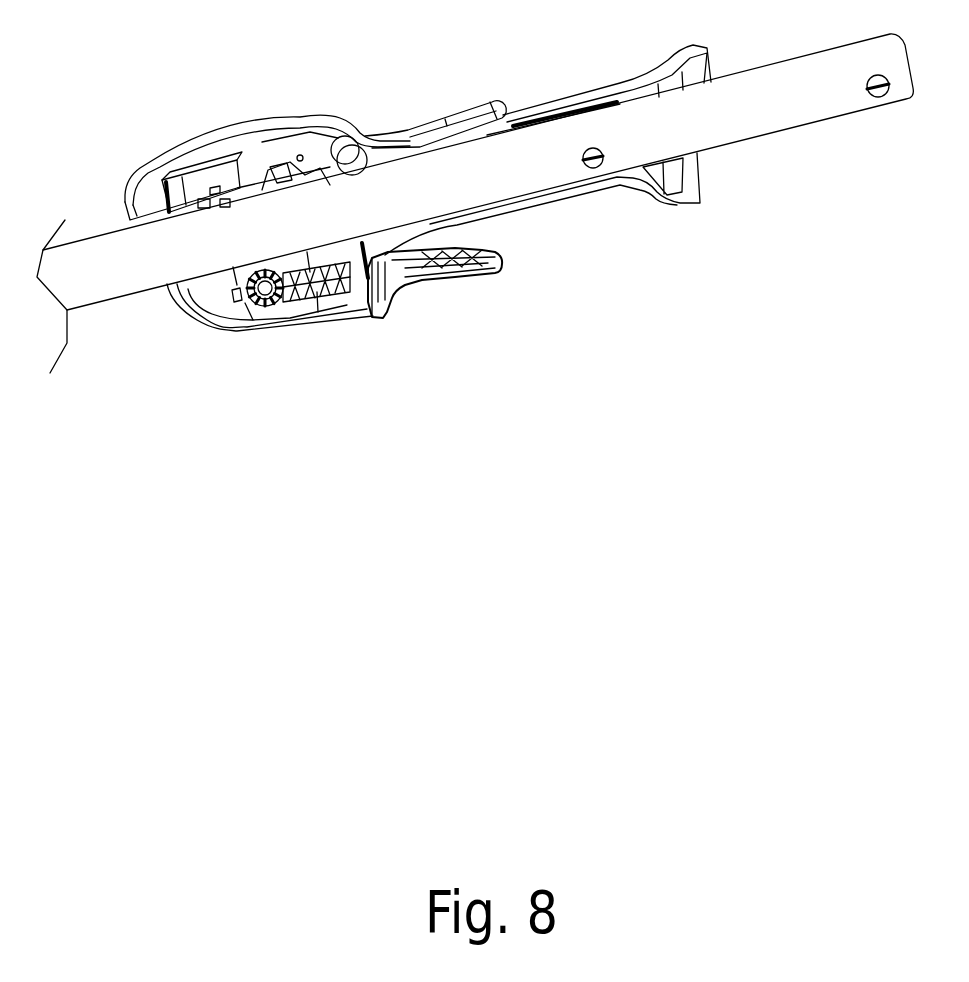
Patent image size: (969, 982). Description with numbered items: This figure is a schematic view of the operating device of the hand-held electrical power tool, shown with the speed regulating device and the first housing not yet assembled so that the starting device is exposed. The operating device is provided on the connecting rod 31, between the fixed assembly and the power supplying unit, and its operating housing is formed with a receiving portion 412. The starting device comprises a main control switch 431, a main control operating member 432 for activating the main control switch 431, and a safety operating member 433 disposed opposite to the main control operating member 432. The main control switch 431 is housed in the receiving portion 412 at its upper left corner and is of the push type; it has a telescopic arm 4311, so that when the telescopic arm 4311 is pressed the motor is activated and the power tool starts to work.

The connecting rod 31 is at (545, 163).
The receiving portion 412 is at (207, 310).
The main control switch 431 is at (197, 187).
The telescopic arm 4311 is at (258, 176).
The main control operating member 432 is at (407, 278).
The safety operating member 433 is at (415, 146).